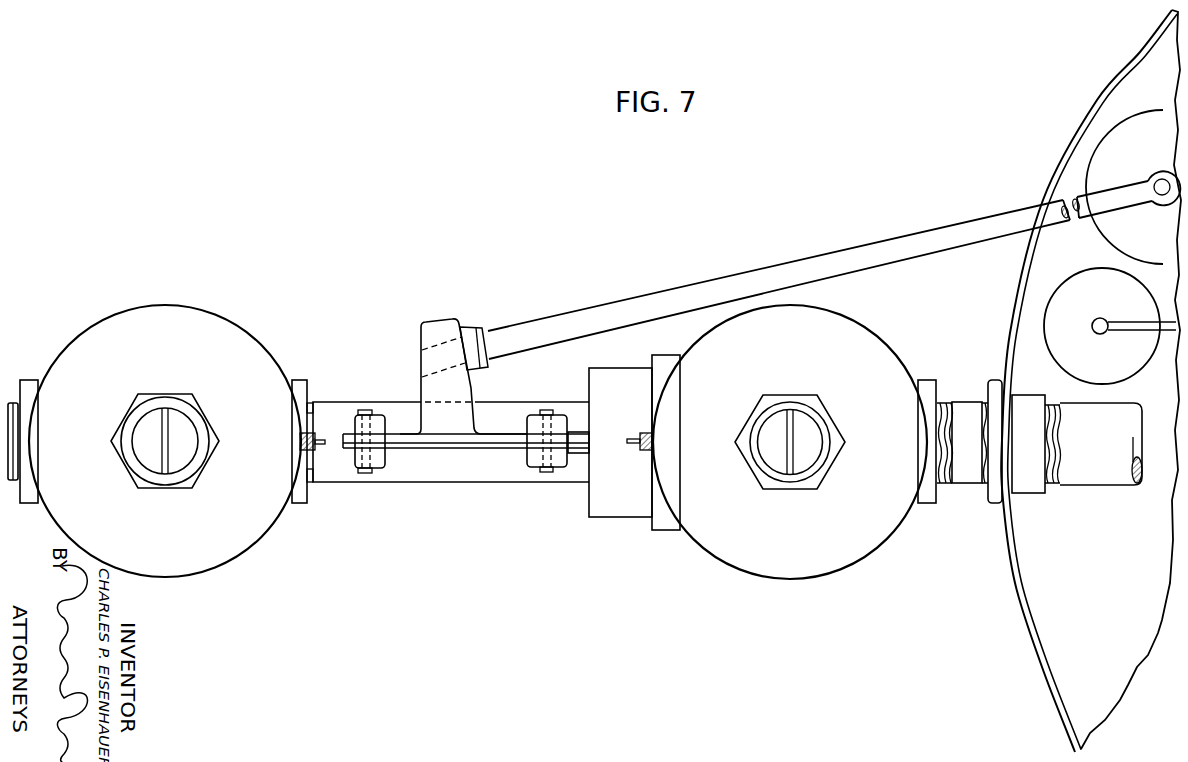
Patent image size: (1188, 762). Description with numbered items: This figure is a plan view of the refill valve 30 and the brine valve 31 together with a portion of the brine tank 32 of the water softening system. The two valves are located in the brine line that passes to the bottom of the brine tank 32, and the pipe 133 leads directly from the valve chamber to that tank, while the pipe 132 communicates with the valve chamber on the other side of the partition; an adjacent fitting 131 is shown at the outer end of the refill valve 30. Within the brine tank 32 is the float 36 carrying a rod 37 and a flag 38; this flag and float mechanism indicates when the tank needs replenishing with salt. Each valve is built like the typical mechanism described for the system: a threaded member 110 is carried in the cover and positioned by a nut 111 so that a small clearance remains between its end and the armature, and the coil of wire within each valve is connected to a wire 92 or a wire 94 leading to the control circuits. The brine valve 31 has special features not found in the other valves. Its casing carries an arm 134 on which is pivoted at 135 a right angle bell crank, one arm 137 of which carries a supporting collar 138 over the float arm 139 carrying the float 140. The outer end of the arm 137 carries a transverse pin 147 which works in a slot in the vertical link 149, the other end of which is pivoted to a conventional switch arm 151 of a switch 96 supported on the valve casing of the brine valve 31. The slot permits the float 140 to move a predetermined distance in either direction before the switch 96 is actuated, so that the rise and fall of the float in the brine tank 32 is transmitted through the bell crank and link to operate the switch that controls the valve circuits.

The refill valve 30 is at (238, 319).
The brine valve 31 is at (873, 330).
The brine tank 32 is at (1013, 586).
The float 36 is at (1091, 273).
The rod 37 is at (1097, 320).
The flag 38 is at (1140, 322).
The wire 92 is at (322, 436).
The set screw 94 is at (631, 438).
The switch 96 is at (613, 518).
The threaded member 110 is at (183, 430).
The nut 111 is at (183, 393).
The washer plate 131 is at (9, 402).
The pipe 132 is at (459, 483).
The pipe 133 is at (967, 483).
The arm 134 is at (343, 468).
The pivot 135 is at (363, 474).
The bell crank arm 137 is at (422, 447).
The supporting collar 138 is at (440, 321).
The float arm 139 is at (640, 296).
The float 140 is at (1157, 110).
The transverse pin 147 is at (547, 473).
The vertical link 149 is at (525, 460).
The switch arm 151 is at (577, 431).